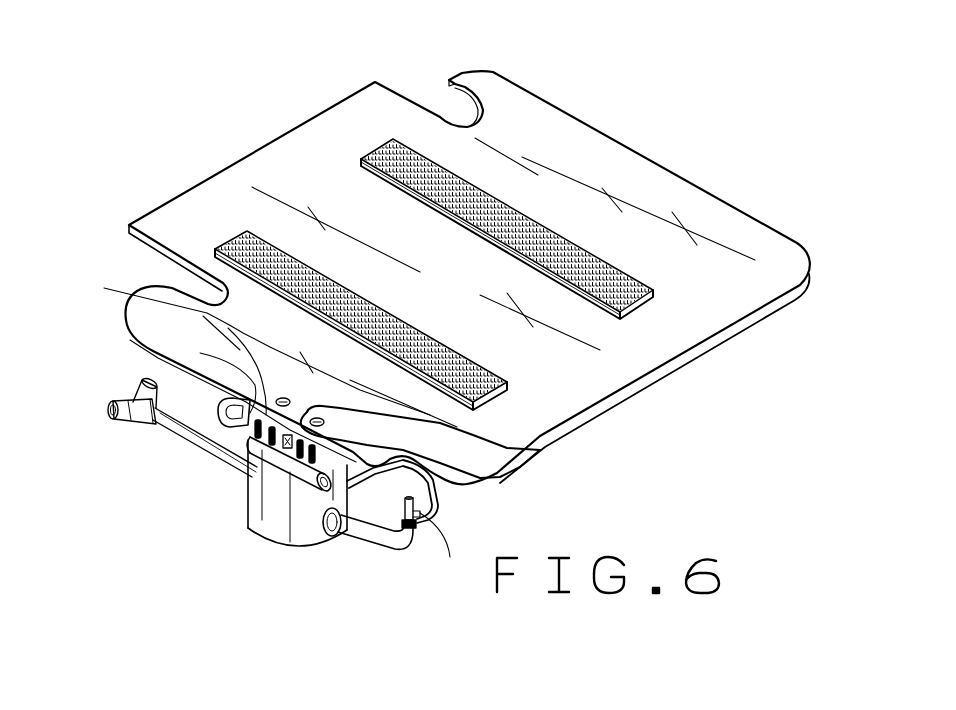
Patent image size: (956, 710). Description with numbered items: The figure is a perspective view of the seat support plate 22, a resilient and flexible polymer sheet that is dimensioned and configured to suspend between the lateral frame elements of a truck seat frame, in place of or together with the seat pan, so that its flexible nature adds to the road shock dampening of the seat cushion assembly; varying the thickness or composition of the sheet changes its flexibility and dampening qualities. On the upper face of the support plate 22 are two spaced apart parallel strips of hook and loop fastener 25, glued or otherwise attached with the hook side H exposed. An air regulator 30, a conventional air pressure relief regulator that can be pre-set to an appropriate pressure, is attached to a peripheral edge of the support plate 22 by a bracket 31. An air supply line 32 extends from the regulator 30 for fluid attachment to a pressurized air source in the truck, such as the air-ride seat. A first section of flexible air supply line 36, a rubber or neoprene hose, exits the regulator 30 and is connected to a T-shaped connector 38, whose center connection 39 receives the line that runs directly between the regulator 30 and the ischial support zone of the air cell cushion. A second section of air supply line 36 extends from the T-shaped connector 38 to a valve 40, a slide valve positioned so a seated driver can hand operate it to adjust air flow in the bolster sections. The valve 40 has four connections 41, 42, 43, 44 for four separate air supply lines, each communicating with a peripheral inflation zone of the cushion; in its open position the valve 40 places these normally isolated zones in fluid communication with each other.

The seat support plate 22 is at (692, 160).
The hook and loop fastener strips 25 is at (463, 177).
The hook side H is at (250, 230).
The air regulator 30 is at (290, 513).
The bracket 31 is at (240, 415).
The air supply line 32 is at (213, 460).
The flexible air supply line 36 is at (412, 550).
The T-shaped connector 38 is at (425, 520).
The center connection 39 is at (420, 518).
The valve 40 is at (277, 470).
The connection 41 is at (235, 398).
The connection 42 is at (252, 367).
The connection 43 is at (453, 426).
The connection 44 is at (500, 476).